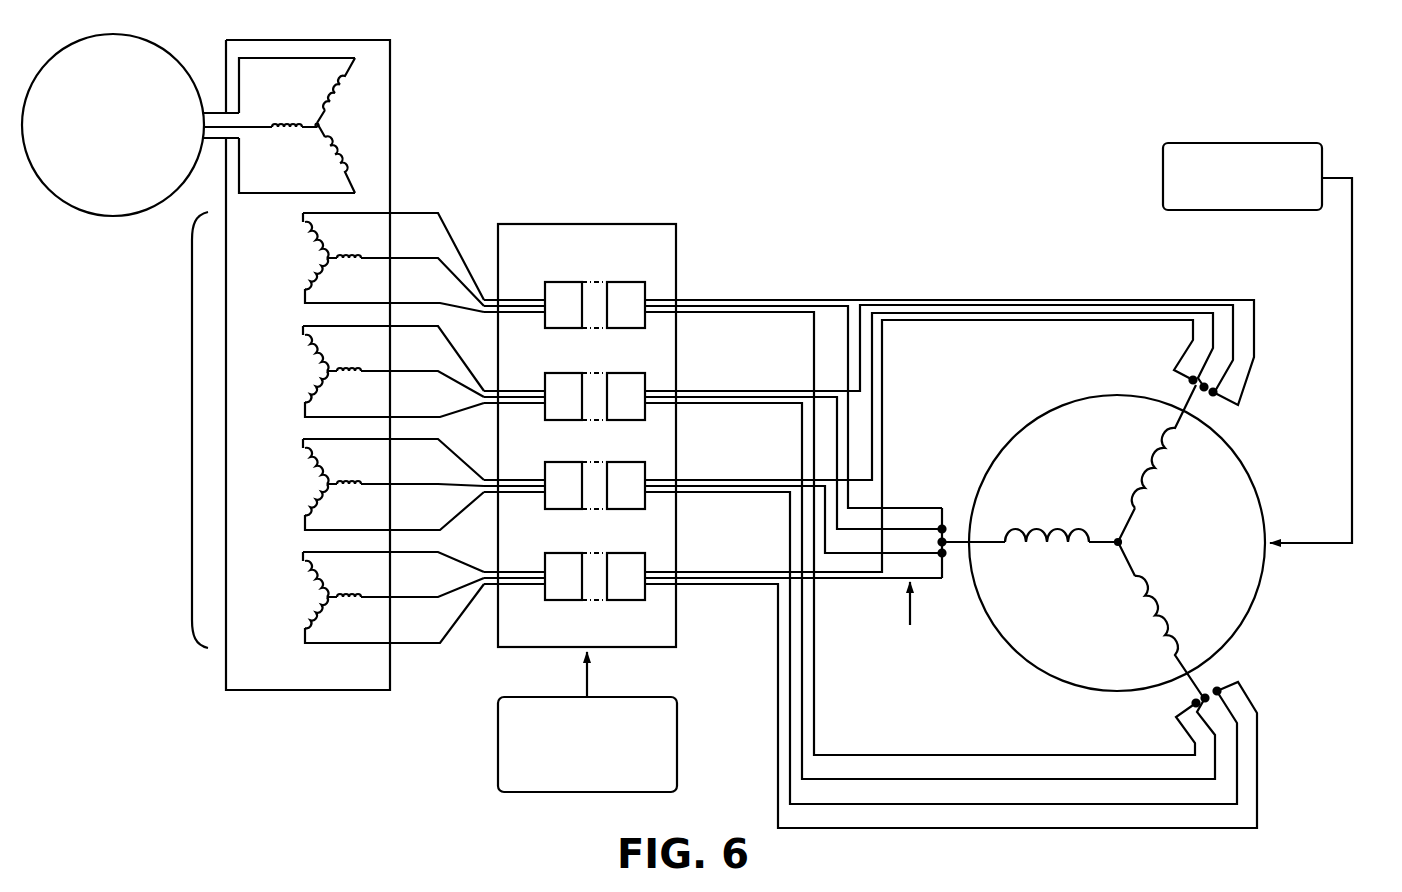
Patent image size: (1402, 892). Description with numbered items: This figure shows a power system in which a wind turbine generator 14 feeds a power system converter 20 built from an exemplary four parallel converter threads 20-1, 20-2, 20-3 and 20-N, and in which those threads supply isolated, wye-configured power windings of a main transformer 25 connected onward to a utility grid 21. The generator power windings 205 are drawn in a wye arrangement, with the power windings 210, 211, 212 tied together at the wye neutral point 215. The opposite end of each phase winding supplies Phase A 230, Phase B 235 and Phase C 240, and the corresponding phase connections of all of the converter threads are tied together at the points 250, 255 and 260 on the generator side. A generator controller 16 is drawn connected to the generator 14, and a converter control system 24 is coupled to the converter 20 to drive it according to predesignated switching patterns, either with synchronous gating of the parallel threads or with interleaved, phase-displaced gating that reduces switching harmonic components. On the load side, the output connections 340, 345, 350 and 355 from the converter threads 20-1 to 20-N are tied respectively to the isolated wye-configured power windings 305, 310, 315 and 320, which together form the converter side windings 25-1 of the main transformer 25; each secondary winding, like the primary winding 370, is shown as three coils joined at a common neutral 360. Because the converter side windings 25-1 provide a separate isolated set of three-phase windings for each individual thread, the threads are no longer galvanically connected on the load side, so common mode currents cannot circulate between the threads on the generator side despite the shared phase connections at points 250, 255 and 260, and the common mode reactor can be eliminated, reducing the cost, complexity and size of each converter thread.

The utility grid 21 is at (157, 41).
The main transformer 25 is at (392, 40).
The primary winding 370 is at (357, 112).
The winding neutral point 360 is at (320, 124).
The isolated wye-configured power winding 305 is at (335, 247).
The isolated wye-configured power winding 310 is at (305, 372).
The isolated wye-configured power winding 315 is at (305, 482).
The isolated wye-configured power winding 320 is at (345, 630).
The converter side windings 25-1 is at (157, 430).
The power converter system 20 is at (647, 224).
The output connection 340 is at (484, 294).
The output connection 345 is at (487, 387).
The output connection 350 is at (487, 478).
The output connection 355 is at (487, 568).
The parallel converter thread 20-1 is at (630, 281).
The parallel converter thread 20-2 is at (630, 372).
The parallel converter thread 20-3 is at (630, 462).
The parallel converter thread 20-N is at (630, 553).
The converter control system 24 is at (678, 745).
The generator controller 16 is at (1243, 143).
The Phase A 230 is at (1264, 338).
The Phase B 235 is at (803, 492).
The Phase C 240 is at (1255, 685).
The wind turbine generator 14 is at (1264, 503).
The generator power windings 205 is at (1093, 533).
The power winding 211 is at (1022, 522).
The power winding 210 is at (1170, 478).
The power winding 212 is at (1160, 615).
The wye neutral point 215 is at (1125, 543).
The input 250 is at (1207, 390).
The input 255 is at (944, 528).
The input 260 is at (1212, 690).